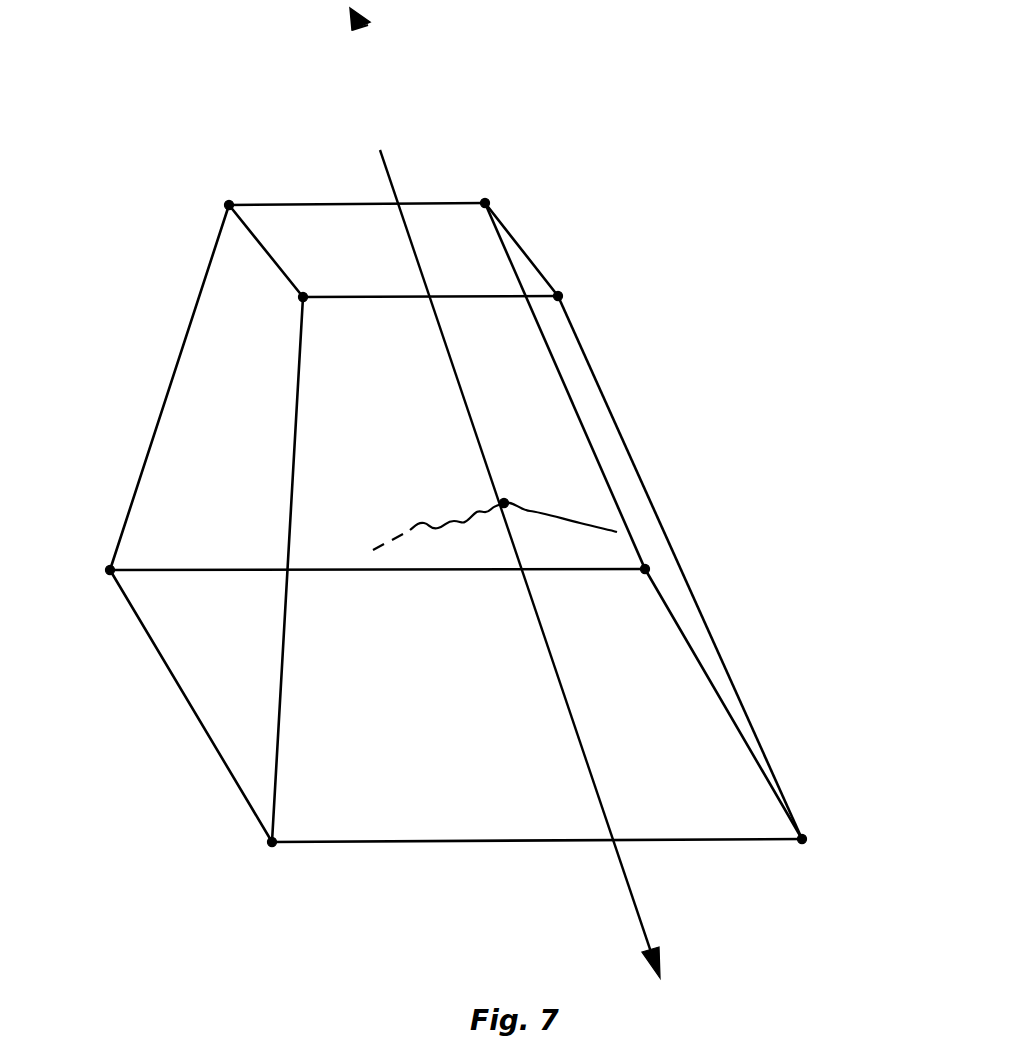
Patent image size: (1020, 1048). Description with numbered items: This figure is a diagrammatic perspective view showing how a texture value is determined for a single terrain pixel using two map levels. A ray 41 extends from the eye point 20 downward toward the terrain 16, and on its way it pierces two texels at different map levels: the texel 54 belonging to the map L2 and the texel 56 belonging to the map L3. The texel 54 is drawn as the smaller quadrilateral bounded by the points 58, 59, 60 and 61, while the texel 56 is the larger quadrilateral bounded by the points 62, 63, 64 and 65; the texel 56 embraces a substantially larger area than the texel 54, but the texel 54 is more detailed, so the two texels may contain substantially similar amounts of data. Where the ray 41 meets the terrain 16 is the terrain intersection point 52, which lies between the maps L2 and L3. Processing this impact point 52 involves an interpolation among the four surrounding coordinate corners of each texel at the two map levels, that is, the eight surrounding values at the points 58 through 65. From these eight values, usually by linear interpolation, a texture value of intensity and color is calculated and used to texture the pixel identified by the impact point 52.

The eye point 20 is at (368, 14).
The terrain 16 is at (420, 520).
The ray 41 is at (602, 793).
The terrain intersection point 52 is at (504, 503).
The texel 54 is at (480, 252).
The texel 56 is at (705, 717).
The point 58 is at (303, 297).
The point 59 is at (558, 296).
The point 60 is at (485, 203).
The point 61 is at (229, 205).
The point 62 is at (272, 842).
The point 63 is at (802, 839).
The point 64 is at (645, 569).
The point 65 is at (110, 570).
The map L2 is at (593, 258).
The map L3 is at (800, 757).